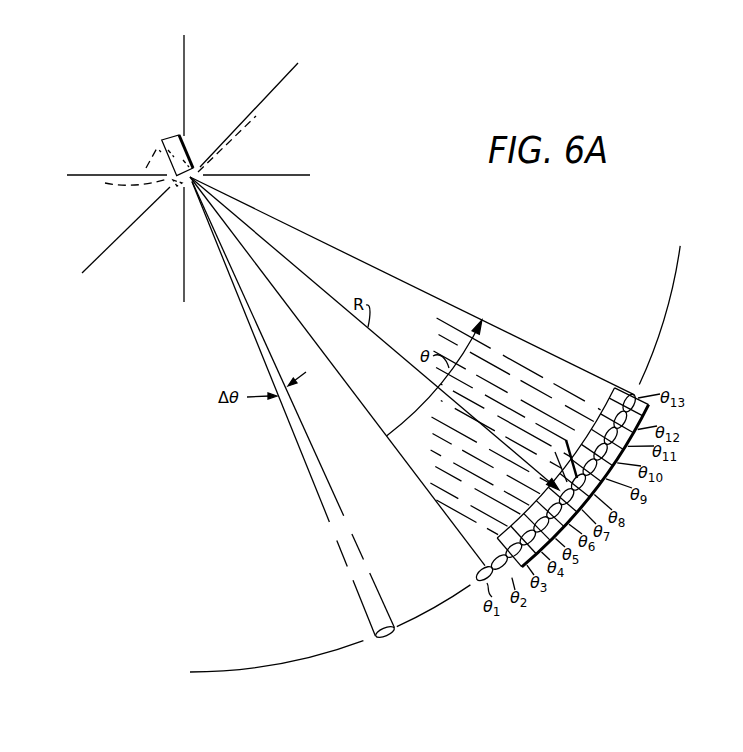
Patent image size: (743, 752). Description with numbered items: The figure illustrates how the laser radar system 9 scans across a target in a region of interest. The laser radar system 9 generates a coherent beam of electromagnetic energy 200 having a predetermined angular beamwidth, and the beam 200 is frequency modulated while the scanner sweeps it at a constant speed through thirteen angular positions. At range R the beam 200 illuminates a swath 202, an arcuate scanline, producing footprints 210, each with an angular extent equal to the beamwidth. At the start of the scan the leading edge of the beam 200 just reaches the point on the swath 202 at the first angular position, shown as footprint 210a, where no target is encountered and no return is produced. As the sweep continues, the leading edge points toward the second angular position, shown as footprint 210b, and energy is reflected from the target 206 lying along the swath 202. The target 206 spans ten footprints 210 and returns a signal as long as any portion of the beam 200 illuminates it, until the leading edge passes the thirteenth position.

The laser radar system 9 is at (186, 146).
The beam of electromagnetic energy 200 is at (244, 309).
The swath 202 is at (675, 282).
The target 206 is at (608, 407).
The footprint 210 is at (390, 636).
The footprint at angular position θ1 210a is at (481, 571).
The footprint at angular position θ2 210b is at (504, 571).